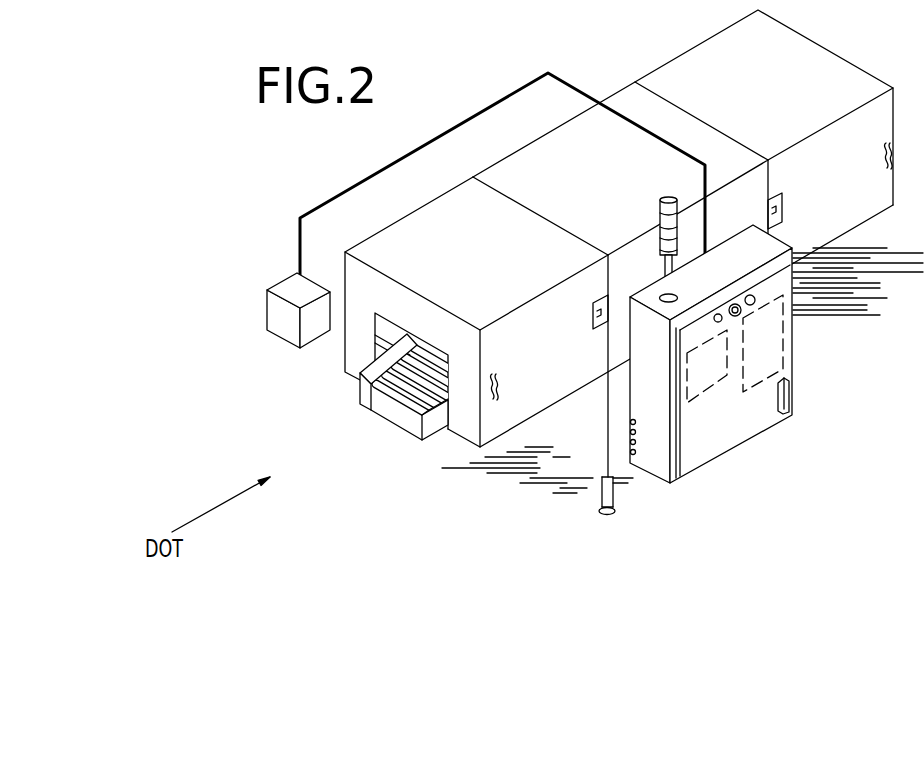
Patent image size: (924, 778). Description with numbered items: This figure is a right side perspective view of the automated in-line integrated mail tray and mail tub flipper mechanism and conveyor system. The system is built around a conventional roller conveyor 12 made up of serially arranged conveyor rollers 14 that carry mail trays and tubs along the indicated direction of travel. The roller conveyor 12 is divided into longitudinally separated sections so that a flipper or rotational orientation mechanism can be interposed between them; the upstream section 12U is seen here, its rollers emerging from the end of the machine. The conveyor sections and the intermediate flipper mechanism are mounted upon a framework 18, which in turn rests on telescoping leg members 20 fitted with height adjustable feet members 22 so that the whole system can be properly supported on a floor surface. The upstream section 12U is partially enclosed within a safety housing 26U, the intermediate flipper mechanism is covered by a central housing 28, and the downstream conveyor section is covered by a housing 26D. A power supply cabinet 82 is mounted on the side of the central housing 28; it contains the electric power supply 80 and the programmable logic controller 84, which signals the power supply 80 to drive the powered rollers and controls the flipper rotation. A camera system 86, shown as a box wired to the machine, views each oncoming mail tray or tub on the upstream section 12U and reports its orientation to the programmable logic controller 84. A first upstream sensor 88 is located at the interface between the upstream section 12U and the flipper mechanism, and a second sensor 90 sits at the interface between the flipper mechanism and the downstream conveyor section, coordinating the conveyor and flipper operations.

The roller conveyor 12 is at (363, 407).
The upstream roller conveyor section 12U is at (362, 395).
The conveyor rollers 14 is at (408, 402).
The framework 18 is at (916, 666).
The telescoping leg members 20 is at (600, 496).
The height adjustable feet members 22 is at (613, 515).
The upstream safety housing 26U is at (480, 254).
The intermediate safety housing 28 is at (617, 176).
The downstream safety housing 26D is at (785, 101).
The electric power supply 80 is at (742, 352).
The power supply cabinet 82 is at (703, 440).
The programmable logic controller 84 is at (762, 343).
The camera system 86 is at (267, 305).
The first upstream sensor 88 is at (595, 318).
The second sensor 90 is at (782, 207).